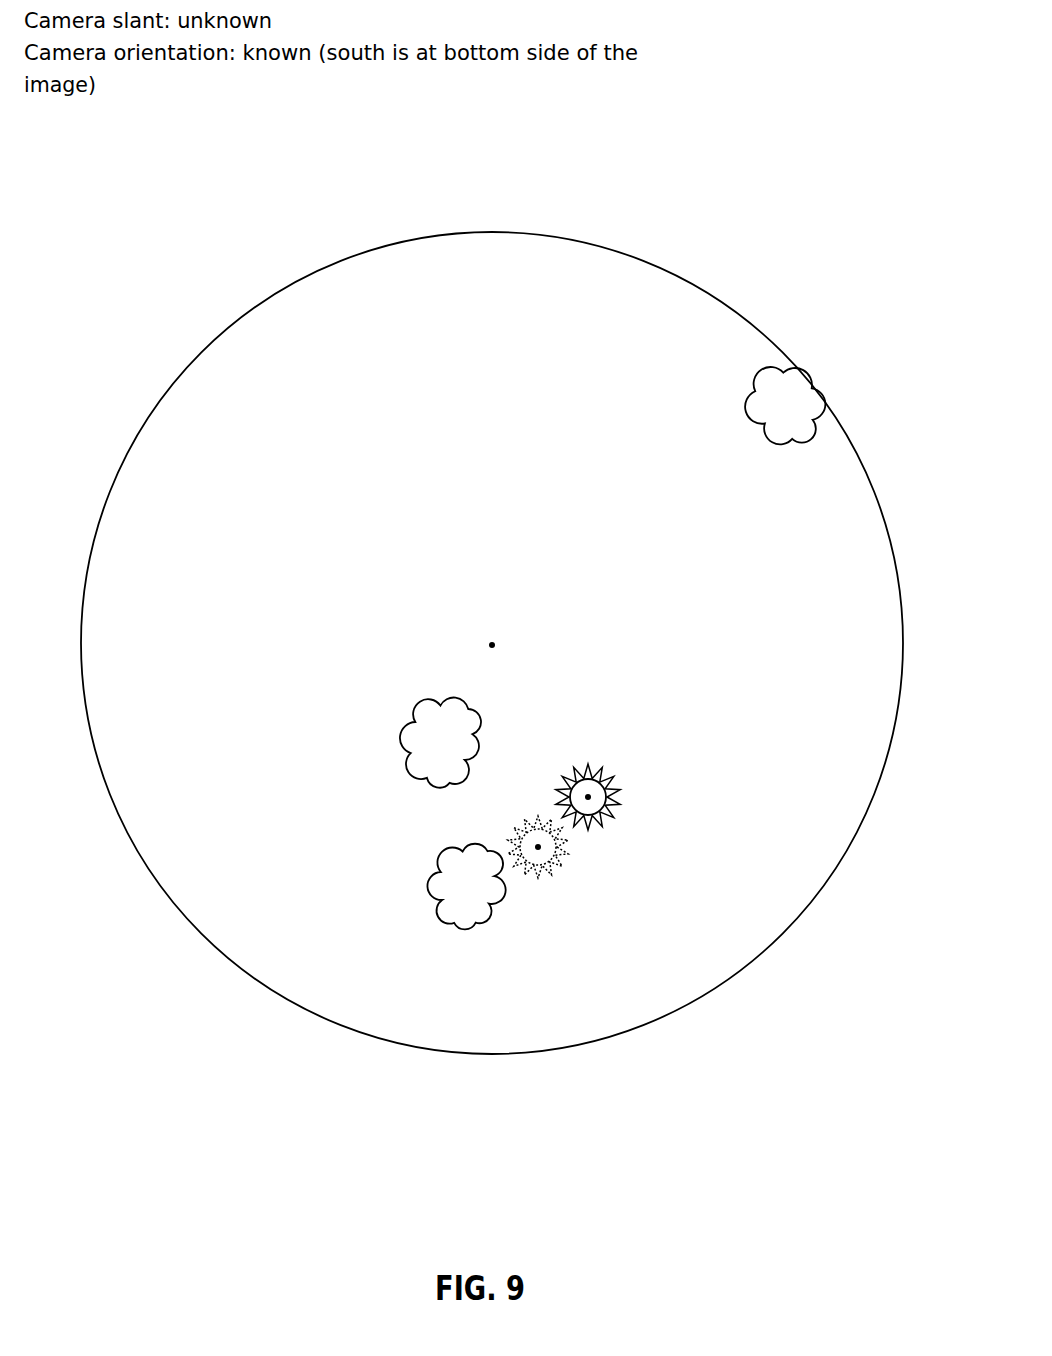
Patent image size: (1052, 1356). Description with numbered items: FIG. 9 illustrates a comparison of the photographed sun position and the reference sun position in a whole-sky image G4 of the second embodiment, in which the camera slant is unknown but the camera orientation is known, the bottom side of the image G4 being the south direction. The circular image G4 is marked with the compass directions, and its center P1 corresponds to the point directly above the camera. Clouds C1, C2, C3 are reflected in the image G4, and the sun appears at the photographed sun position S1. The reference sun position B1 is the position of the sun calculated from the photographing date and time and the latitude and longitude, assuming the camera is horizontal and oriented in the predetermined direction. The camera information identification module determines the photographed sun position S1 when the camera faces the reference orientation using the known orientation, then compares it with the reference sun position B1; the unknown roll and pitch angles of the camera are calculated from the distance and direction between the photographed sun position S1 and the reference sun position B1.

The image G4 is at (694, 249).
The cloud C1 is at (473, 832).
The cloud C2 is at (412, 733).
The cloud C3 is at (770, 382).
The center P1 is at (492, 645).
The photographed sun position S1 is at (588, 800).
The reference sun position B1 is at (538, 850).